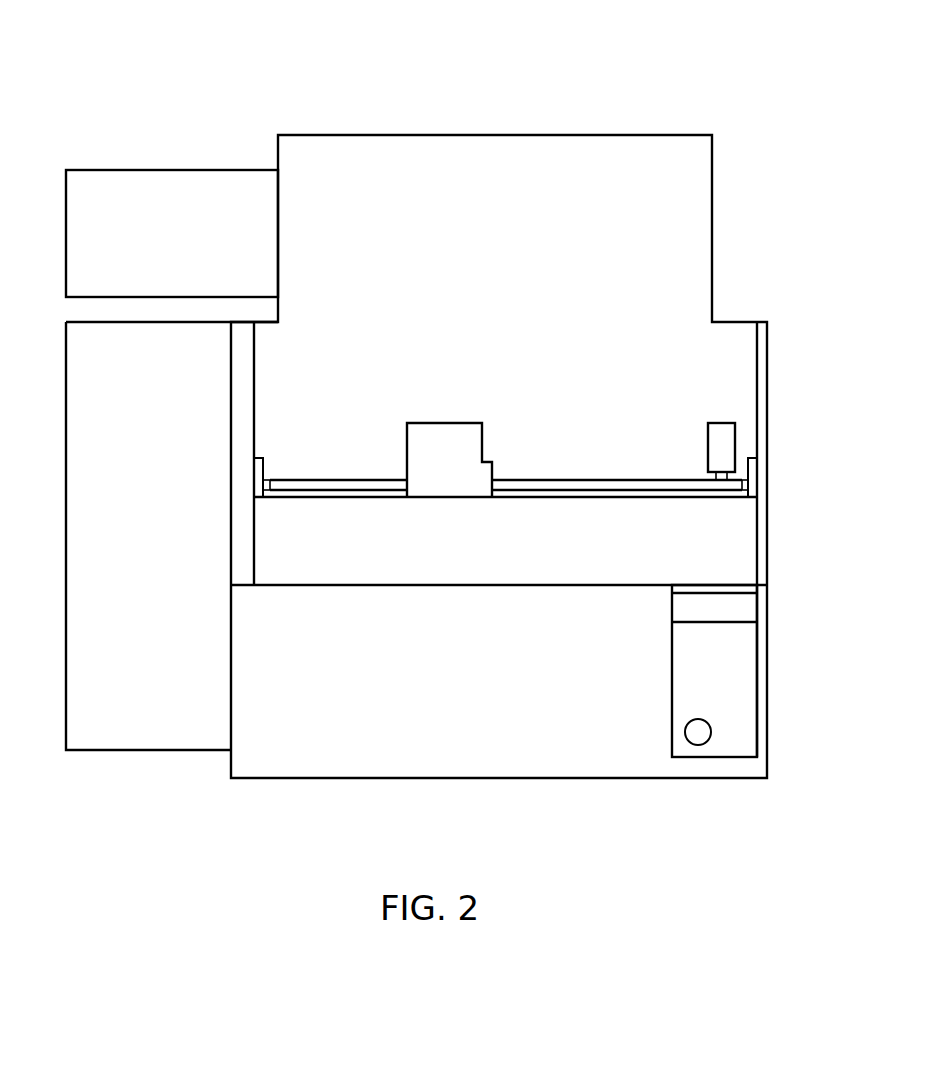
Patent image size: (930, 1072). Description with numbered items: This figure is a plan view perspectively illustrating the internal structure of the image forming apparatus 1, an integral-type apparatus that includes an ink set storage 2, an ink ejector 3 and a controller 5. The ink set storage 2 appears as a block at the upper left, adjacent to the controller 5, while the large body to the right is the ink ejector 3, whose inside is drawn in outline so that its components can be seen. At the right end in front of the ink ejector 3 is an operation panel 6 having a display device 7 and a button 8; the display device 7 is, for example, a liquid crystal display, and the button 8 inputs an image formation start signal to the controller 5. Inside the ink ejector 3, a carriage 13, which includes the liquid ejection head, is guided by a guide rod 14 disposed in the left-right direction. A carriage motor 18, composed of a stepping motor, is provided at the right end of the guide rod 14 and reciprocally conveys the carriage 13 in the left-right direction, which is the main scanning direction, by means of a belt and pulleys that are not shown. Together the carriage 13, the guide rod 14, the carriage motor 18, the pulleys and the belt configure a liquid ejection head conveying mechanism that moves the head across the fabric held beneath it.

The image forming apparatus 1 is at (463, 62).
The ink set storage 2 is at (316, 764).
The ink ejector 3 is at (78, 513).
The controller 5 is at (170, 188).
The operation panel 6 is at (745, 645).
The display device 7 is at (745, 605).
The button 8 is at (700, 740).
The carriage 13 is at (445, 488).
The guide rod 14 is at (578, 487).
The carriage motor 18 is at (728, 450).